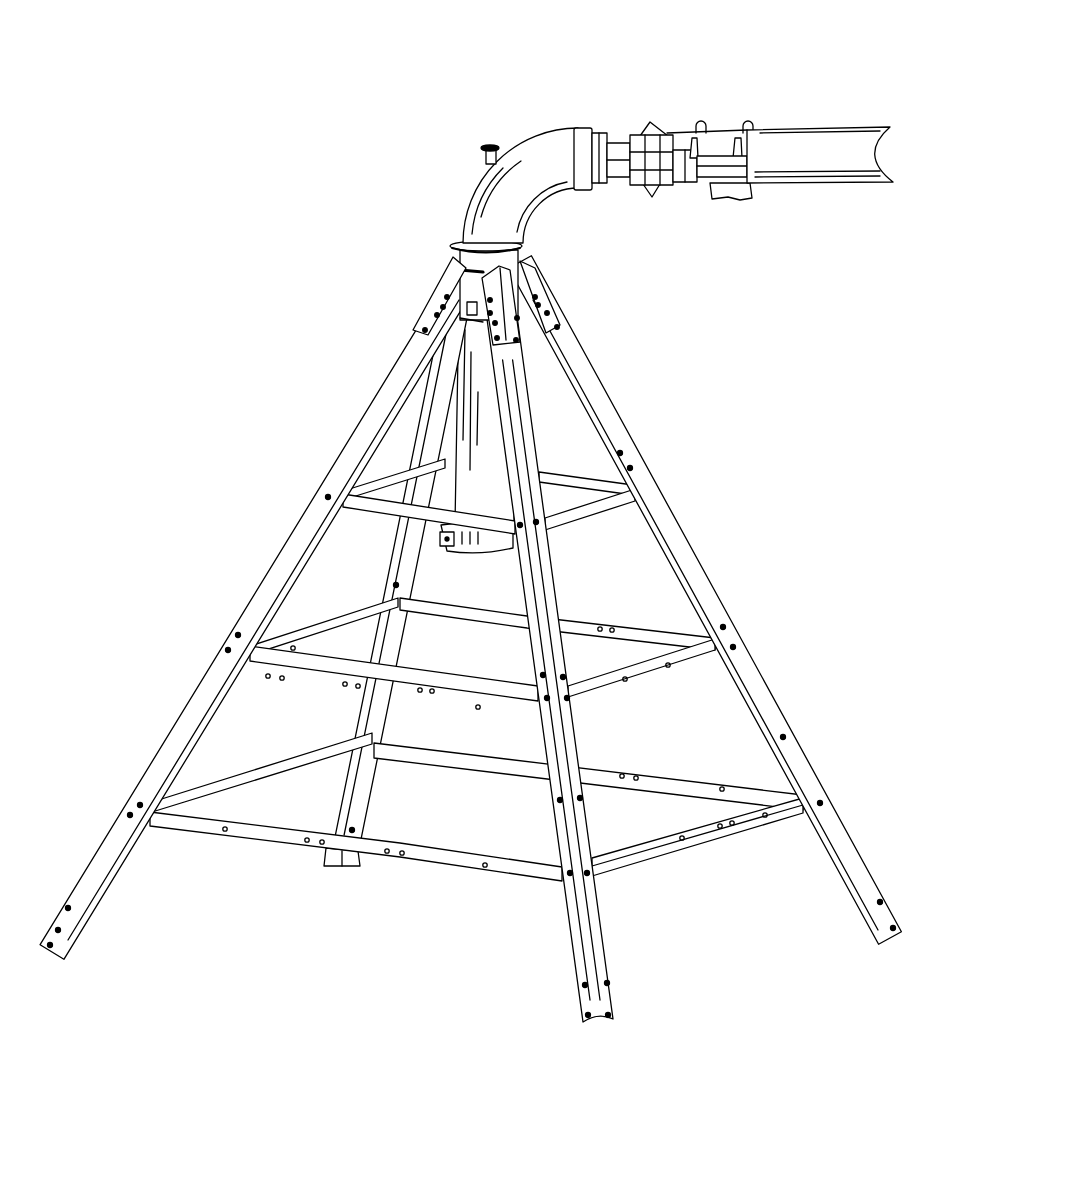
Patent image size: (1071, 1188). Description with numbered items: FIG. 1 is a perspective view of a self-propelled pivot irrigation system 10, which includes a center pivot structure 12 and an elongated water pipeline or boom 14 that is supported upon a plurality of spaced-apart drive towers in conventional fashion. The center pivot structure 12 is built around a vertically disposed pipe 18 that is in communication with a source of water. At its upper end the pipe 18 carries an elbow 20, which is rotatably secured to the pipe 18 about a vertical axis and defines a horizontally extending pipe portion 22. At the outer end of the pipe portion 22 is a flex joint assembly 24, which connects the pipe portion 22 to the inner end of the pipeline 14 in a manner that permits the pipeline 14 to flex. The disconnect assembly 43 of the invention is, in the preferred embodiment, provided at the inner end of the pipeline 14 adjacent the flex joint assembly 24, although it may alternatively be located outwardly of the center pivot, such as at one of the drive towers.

The self-propelled pivot irrigation system 10 is at (480, 92).
The center pivot structure 12 is at (355, 405).
The water pipeline 14 is at (800, 118).
The vertically disposed pipe 18 is at (490, 447).
The elbow 20 is at (488, 200).
The horizontally extending pipe portion 22 is at (560, 150).
The flex joint assembly 24 is at (615, 133).
The disconnect assembly 43 is at (692, 205).